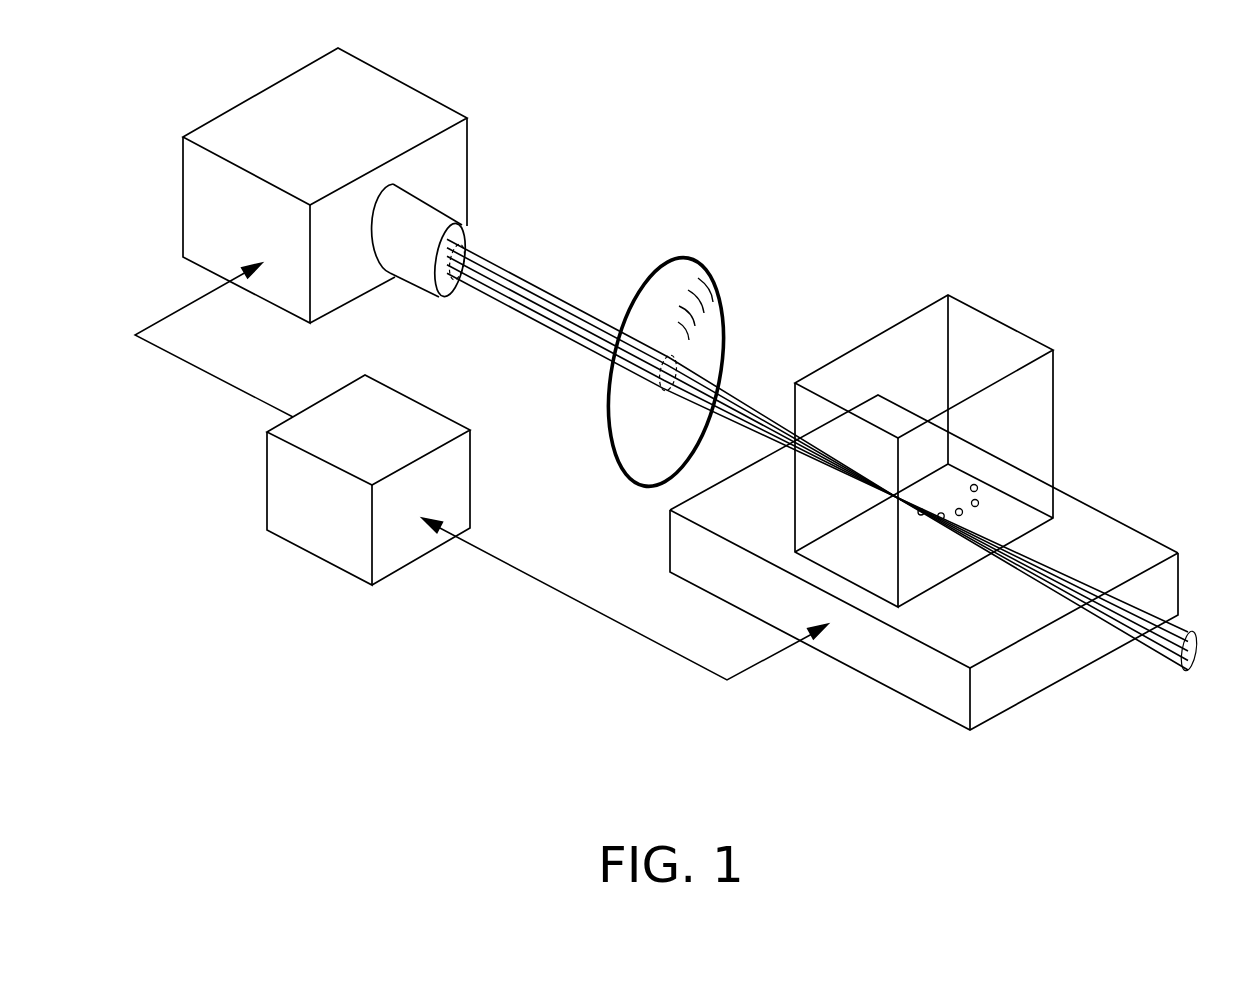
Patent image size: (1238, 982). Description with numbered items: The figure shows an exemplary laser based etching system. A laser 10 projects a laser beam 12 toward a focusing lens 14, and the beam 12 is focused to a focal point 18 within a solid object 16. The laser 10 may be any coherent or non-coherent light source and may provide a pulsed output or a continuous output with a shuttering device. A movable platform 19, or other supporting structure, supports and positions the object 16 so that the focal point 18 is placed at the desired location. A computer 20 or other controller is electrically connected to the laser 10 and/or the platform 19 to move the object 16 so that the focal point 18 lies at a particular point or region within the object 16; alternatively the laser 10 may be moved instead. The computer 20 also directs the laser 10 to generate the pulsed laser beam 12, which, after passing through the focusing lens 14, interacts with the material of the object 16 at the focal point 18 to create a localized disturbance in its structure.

The laser 10 is at (368, 80).
The laser beam 12 is at (523, 287).
The focusing lens 14 is at (713, 320).
The solid object 16 is at (980, 335).
The focal point 18 is at (921, 515).
The movable platform 19 is at (1127, 538).
The computer 20 is at (383, 407).